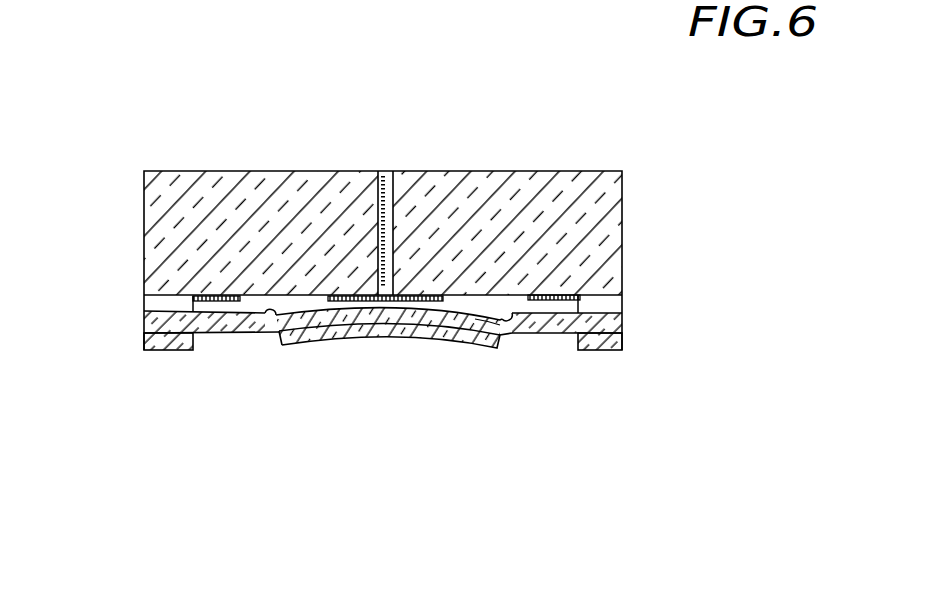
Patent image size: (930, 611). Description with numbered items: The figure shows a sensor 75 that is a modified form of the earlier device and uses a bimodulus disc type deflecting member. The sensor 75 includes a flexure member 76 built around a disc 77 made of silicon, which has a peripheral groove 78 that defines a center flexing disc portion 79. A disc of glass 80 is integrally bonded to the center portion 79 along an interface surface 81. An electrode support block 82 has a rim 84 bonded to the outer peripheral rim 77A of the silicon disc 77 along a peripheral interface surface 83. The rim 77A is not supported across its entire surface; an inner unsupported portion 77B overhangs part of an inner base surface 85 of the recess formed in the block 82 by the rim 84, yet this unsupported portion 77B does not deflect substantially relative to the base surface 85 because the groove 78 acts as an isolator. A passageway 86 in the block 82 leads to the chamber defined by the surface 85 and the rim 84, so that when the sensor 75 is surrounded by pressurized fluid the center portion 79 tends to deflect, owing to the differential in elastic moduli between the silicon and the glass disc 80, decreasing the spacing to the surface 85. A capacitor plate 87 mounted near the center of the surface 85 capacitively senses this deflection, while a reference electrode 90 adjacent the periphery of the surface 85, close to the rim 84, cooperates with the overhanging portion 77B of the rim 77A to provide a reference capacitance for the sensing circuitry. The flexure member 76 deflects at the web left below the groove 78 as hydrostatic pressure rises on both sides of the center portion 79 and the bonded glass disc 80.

The sensor 75 is at (151, 158).
The electrode support block 82 is at (315, 180).
The passageway 86 is at (388, 180).
The rim 84 is at (182, 302).
The peripheral interface surface 83 is at (166, 312).
The reference electrode 90 is at (584, 298).
The outer peripheral rim 77A is at (153, 322).
The inner unsupported portion 77B is at (224, 334).
The disc 77 is at (538, 346).
The peripheral groove 78 is at (269, 319).
The flexure member 76 is at (377, 328).
The inner base surface 85 is at (300, 300).
The capacitor plate 87 is at (360, 310).
The disc of glass 80 is at (462, 345).
The interface surface 81 is at (446, 316).
The center flexing disc portion 79 is at (475, 318).